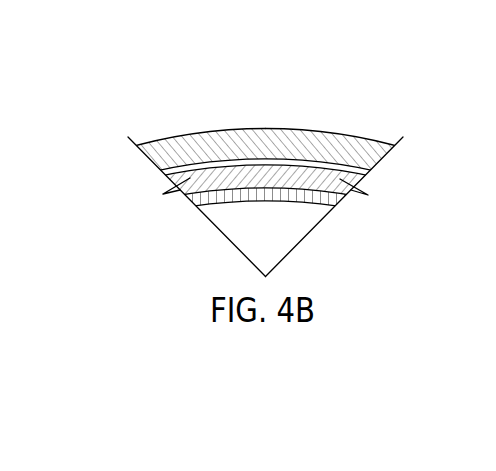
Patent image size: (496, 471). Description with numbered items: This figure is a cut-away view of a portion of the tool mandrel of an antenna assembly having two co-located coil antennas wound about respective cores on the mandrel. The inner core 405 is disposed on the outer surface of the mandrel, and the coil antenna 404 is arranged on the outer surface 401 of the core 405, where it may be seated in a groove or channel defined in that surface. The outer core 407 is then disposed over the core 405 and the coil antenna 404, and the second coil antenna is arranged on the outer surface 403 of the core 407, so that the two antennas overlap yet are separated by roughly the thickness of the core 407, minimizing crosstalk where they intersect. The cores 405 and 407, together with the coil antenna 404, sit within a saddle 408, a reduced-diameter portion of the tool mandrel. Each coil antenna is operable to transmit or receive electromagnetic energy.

The outer surface 401 is at (193, 166).
The outer surface 403 is at (157, 152).
The coil antenna 404 is at (282, 161).
The core 405 is at (318, 182).
The core 407 is at (362, 163).
The saddle 408 is at (232, 191).